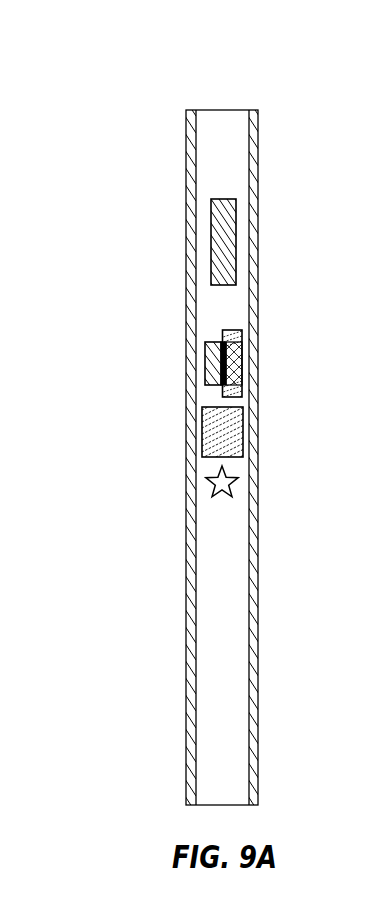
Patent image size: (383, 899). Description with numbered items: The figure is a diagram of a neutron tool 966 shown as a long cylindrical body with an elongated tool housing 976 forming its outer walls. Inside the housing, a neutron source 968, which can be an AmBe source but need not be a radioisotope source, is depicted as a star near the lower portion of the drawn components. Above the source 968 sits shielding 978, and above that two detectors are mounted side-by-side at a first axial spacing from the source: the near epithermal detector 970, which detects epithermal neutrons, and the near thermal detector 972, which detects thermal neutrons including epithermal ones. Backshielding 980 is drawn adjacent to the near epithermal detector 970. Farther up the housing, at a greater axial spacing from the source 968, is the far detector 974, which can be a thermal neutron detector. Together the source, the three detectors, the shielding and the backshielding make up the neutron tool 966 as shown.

The neutron tool 966 is at (131, 63).
The neutron source 968 is at (213, 485).
The near epithermal detector 970 is at (240, 368).
The near thermal detector 972 is at (208, 368).
The far detector 974 is at (215, 233).
The tool housing 976 is at (197, 174).
The shielding 978 is at (208, 437).
The backshielding 980 is at (240, 335).